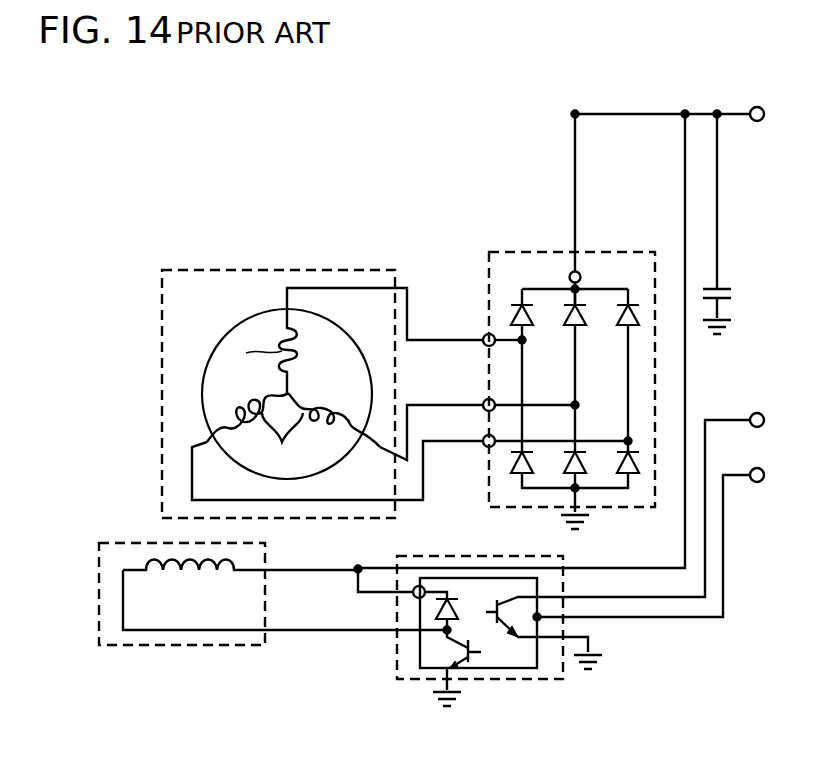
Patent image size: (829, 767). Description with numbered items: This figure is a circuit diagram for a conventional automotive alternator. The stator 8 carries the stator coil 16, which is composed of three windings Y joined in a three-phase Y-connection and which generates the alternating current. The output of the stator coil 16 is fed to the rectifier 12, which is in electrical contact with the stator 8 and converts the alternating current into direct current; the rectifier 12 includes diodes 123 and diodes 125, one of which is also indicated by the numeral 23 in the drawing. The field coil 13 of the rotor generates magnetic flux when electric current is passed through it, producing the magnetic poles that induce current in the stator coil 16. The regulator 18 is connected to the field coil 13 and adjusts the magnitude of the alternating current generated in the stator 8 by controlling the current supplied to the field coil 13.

The stator 8 is at (197, 270).
The stator coil 16 is at (268, 322).
The rectifier 12 is at (519, 252).
The claw-shaped magnetic poles 23 is at (509, 320).
The diodes 123 is at (638, 312).
The diodes 125 is at (515, 470).
The field coil 13 is at (181, 647).
The regulator 18 is at (508, 681).